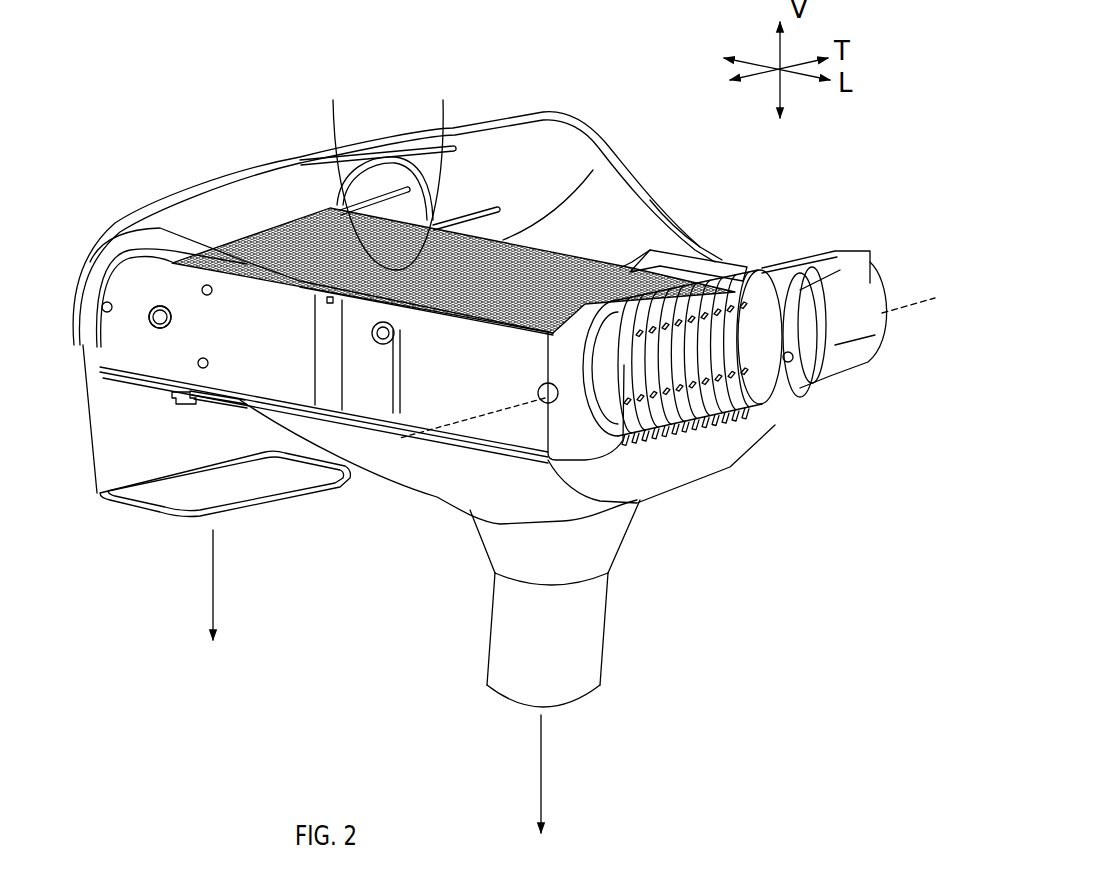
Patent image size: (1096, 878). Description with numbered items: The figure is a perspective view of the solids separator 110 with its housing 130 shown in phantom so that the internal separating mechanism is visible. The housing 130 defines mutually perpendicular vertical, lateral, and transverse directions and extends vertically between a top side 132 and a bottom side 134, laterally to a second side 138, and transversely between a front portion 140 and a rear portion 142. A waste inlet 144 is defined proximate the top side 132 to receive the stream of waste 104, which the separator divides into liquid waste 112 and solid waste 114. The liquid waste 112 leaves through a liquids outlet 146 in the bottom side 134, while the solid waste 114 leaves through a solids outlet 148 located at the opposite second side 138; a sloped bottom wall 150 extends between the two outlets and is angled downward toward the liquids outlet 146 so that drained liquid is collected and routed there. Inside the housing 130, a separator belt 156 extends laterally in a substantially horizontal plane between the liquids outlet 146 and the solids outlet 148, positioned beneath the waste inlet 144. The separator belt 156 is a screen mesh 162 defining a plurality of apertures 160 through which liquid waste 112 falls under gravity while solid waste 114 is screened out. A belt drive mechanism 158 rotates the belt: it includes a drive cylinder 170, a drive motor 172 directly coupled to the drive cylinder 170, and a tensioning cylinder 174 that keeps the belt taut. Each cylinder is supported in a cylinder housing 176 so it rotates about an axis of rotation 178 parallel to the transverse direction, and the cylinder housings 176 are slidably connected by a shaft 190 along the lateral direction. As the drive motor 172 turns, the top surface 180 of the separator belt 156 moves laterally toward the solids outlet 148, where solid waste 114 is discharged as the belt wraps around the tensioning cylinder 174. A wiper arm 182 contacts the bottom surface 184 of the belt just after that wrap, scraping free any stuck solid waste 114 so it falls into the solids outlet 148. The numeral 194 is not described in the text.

The stream of waste 104 is at (392, 207).
The solids separator 110 is at (203, 80).
The liquid waste 112 is at (541, 765).
The solid waste 114 is at (213, 573).
The housing 130 is at (593, 132).
The top side 132 is at (550, 155).
The bottom side 134 is at (393, 447).
The second side 138 is at (110, 223).
The front portion 140 is at (684, 232).
The rear portion 142 is at (180, 342).
The waste inlet 144 is at (432, 163).
The liquids outlet 146 is at (587, 655).
The solids outlet 148 is at (100, 458).
The sloped bottom wall 150 is at (437, 503).
The separator belt 156 is at (623, 270).
The belt drive mechanism 158 is at (768, 418).
The apertures 160 is at (737, 413).
The screen mesh 162 is at (792, 346).
The drive cylinder 170 is at (742, 414).
The drive motor 172 is at (860, 314).
The tensioning cylinder 174 is at (180, 297).
The cylinder housing 176 is at (257, 297).
The axis of rotation 178 is at (918, 300).
The top surface 180 is at (697, 281).
The wiper arm 182 is at (173, 405).
The bottom surface 184 is at (350, 432).
The shaft 190 is at (394, 334).
The teeth 194 is at (697, 412).